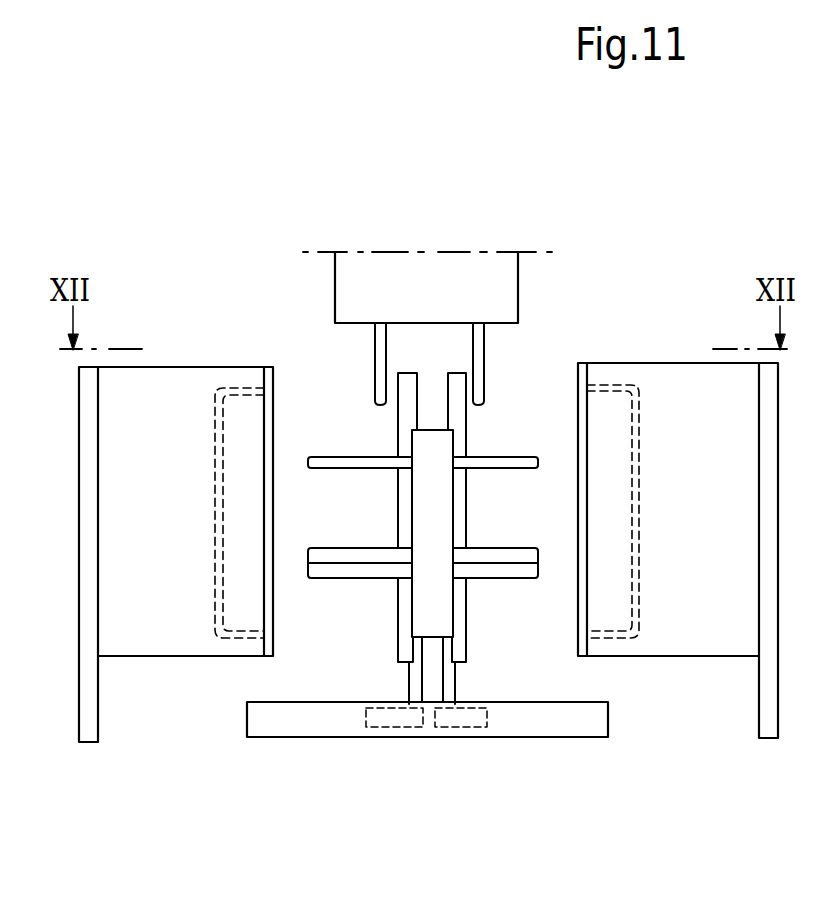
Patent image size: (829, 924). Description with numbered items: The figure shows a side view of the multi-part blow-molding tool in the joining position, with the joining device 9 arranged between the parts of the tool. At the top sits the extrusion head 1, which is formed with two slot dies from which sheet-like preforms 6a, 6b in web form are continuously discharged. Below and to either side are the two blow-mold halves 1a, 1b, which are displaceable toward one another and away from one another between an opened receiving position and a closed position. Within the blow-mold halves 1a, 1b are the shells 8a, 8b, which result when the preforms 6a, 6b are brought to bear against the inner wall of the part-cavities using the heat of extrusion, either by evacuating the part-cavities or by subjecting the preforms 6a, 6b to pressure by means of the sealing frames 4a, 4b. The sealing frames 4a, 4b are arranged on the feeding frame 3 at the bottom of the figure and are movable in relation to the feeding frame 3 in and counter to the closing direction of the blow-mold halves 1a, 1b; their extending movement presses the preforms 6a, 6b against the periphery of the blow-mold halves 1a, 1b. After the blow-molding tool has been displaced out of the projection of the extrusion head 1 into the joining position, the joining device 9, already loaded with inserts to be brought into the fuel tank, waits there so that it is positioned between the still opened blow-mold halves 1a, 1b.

The extrusion head 1 is at (457, 276).
The blow-mold half 1a is at (145, 613).
The blow-mold half 1b is at (705, 612).
The feeding frame 3 is at (520, 715).
The sealing frame 4a is at (398, 427).
The sealing frame 4b is at (462, 425).
The preform 6a is at (375, 349).
The preform 6b is at (483, 356).
The shell 8a is at (237, 603).
The shell 8b is at (632, 567).
The joining device 9 is at (434, 505).